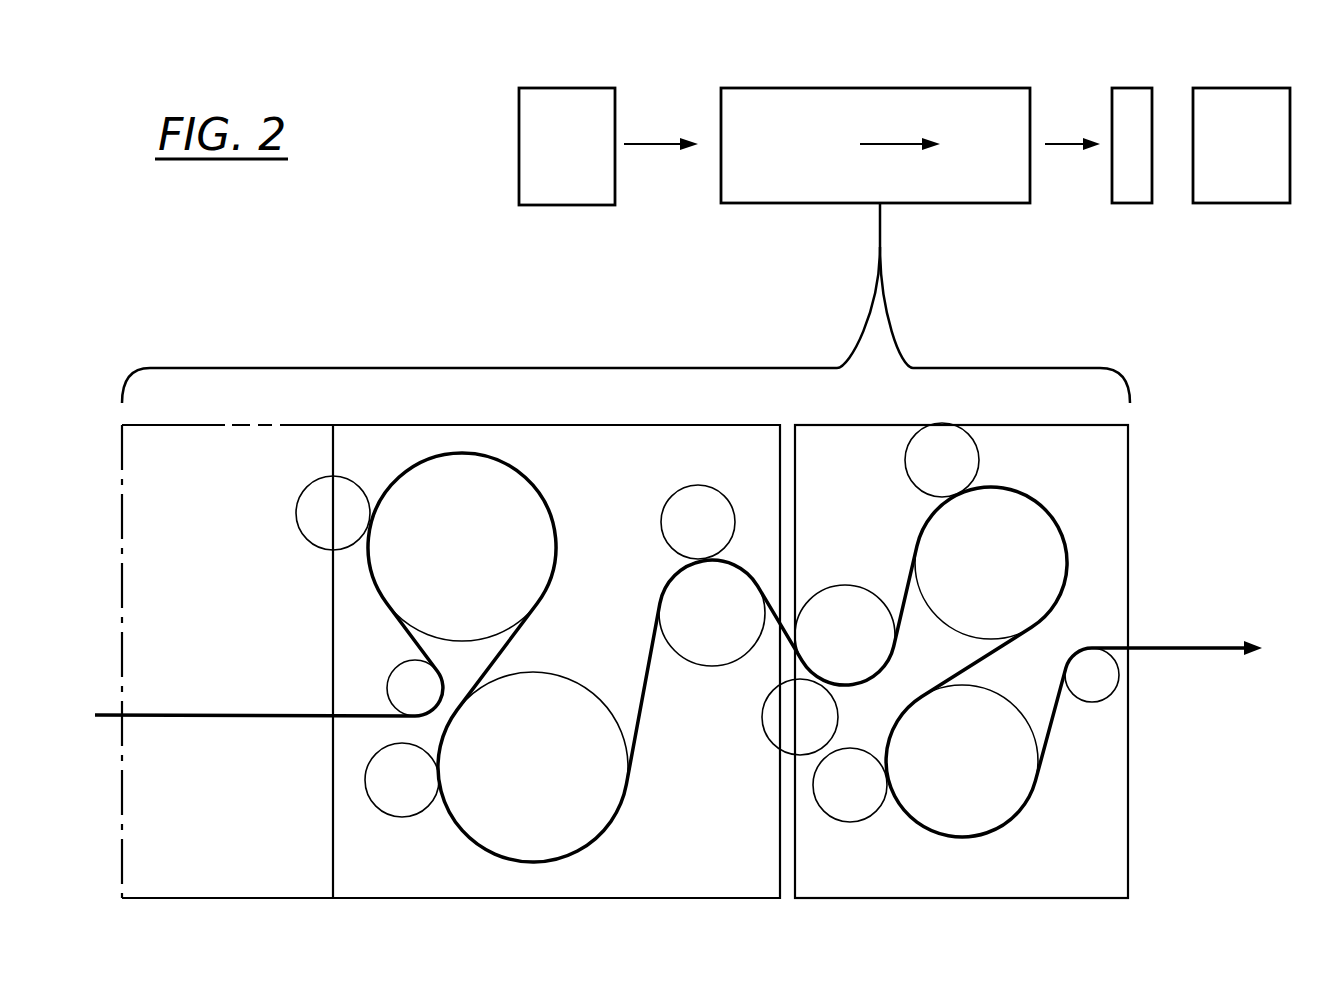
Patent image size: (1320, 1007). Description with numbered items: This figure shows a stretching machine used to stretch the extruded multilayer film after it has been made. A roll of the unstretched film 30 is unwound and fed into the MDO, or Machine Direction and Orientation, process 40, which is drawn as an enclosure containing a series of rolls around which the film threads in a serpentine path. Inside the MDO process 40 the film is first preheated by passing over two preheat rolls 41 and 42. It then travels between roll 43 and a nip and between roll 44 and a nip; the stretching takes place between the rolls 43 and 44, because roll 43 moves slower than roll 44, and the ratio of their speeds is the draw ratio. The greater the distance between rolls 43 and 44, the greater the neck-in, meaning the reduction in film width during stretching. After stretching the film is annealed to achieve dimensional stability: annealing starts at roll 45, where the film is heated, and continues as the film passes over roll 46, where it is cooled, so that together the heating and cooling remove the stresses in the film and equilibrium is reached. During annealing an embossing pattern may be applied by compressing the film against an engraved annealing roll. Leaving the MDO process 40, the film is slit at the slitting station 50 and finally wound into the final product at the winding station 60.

The roll of unstretched film 30 is at (583, 83).
The MDO process 40 is at (935, 82).
The slitting station 50 is at (1121, 80).
The final product winding 60 is at (1238, 80).
The preheat roll 41 is at (475, 557).
The preheat roll 42 is at (552, 777).
The stretching roll 43 is at (731, 622).
The stretching roll 44 is at (823, 643).
The annealing heating roll 45 is at (972, 575).
The cooling roll 46 is at (945, 768).